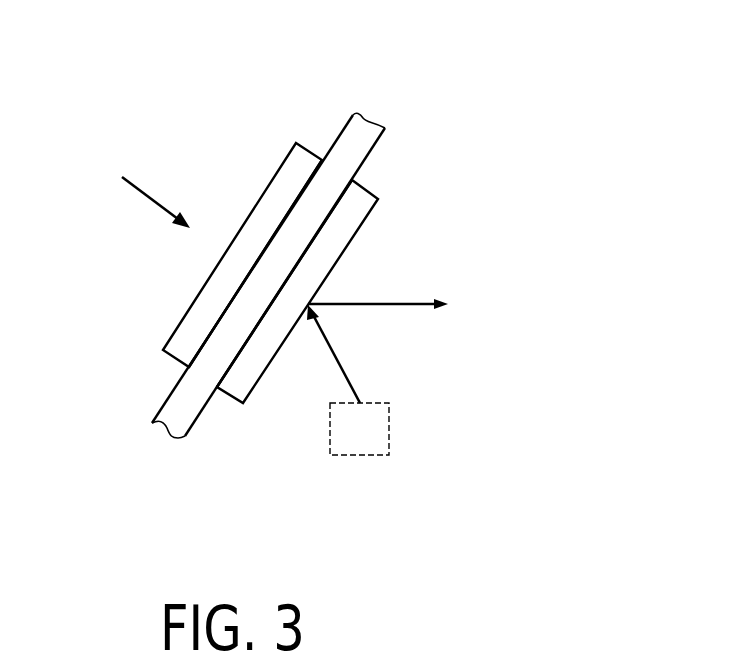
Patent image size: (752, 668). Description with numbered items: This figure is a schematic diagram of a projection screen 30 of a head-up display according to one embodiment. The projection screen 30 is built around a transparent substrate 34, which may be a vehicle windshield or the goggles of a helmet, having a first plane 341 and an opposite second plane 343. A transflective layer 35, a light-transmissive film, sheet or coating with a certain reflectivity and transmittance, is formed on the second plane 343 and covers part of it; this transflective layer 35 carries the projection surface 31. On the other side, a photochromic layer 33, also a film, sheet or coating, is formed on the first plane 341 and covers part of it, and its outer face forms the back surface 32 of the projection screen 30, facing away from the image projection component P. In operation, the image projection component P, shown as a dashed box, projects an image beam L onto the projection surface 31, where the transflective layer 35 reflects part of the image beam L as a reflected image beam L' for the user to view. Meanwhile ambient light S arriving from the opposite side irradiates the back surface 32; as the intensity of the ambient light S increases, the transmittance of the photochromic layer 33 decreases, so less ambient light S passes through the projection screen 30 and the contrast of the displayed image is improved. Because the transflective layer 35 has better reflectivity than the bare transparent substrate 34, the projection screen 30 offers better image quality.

The projection screen 30 is at (297, 521).
The projection surface 31 is at (272, 380).
The back surface 32 is at (152, 317).
The photochromic layer 33 is at (176, 351).
The transparent substrate 34 is at (343, 281).
The first plane 341 is at (332, 145).
The second plane 343 is at (364, 158).
The transflective layer 35 is at (240, 383).
The ambient light S is at (150, 195).
The image beam L is at (361, 354).
The reflected image beam L' is at (382, 274).
The image projection component P is at (355, 438).